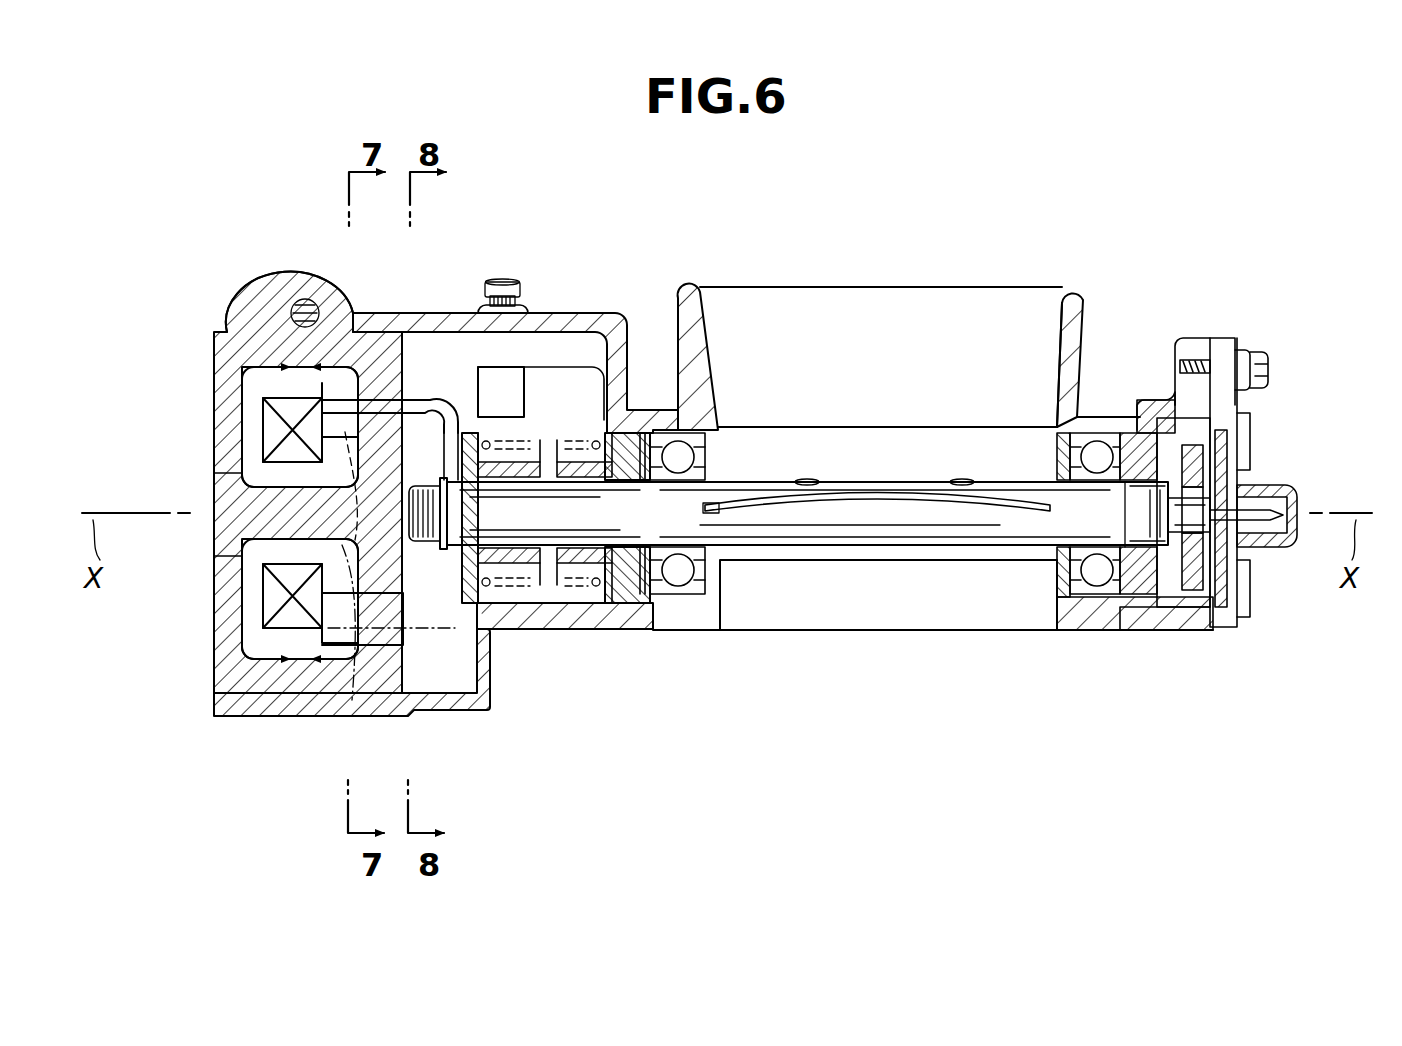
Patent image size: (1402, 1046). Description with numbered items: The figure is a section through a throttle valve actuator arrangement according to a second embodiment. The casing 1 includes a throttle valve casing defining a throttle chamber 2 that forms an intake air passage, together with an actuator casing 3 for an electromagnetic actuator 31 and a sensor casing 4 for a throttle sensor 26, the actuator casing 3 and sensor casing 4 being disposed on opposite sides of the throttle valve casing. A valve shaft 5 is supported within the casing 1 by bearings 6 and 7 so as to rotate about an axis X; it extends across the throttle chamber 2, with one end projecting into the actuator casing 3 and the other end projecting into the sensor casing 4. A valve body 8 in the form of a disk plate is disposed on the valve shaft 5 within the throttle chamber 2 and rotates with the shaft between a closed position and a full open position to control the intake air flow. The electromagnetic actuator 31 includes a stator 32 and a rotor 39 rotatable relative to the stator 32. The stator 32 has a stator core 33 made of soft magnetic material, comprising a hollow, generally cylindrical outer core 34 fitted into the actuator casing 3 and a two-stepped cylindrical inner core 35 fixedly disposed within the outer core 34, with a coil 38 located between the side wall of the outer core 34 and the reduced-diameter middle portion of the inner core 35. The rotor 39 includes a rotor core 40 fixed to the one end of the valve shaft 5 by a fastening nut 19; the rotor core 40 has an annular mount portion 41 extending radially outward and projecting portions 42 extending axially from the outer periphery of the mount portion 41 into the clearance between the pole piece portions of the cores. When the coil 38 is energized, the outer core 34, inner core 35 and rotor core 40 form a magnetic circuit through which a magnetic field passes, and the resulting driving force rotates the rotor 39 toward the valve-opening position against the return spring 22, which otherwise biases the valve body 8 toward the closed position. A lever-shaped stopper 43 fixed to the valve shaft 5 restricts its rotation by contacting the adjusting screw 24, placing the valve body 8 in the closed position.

The casing 1 is at (700, 286).
The throttle chamber 2 is at (1053, 312).
The actuator casing 3 is at (590, 325).
The sensor casing 4 is at (1193, 345).
The valve shaft 5 is at (975, 530).
The bearing 6 is at (690, 590).
The bearing 7 is at (1095, 585).
The valve body 8 is at (853, 507).
The fastening nut 19 is at (432, 545).
The return spring 22 is at (596, 586).
The adjusting screw 24 is at (504, 283).
The throttle sensor 26 is at (1225, 607).
The electromagnetic actuator 31 is at (305, 509).
The stator 32 is at (228, 380).
The stator core 33 is at (222, 703).
The outer core 34 is at (228, 612).
The inner core 35 is at (228, 495).
The coil 38 is at (275, 432).
The rotor 39 is at (417, 403).
The rotor core 40 is at (403, 446).
The mount portion 41 is at (452, 437).
The projecting portion 42 is at (375, 408).
The stopper 43 is at (513, 387).